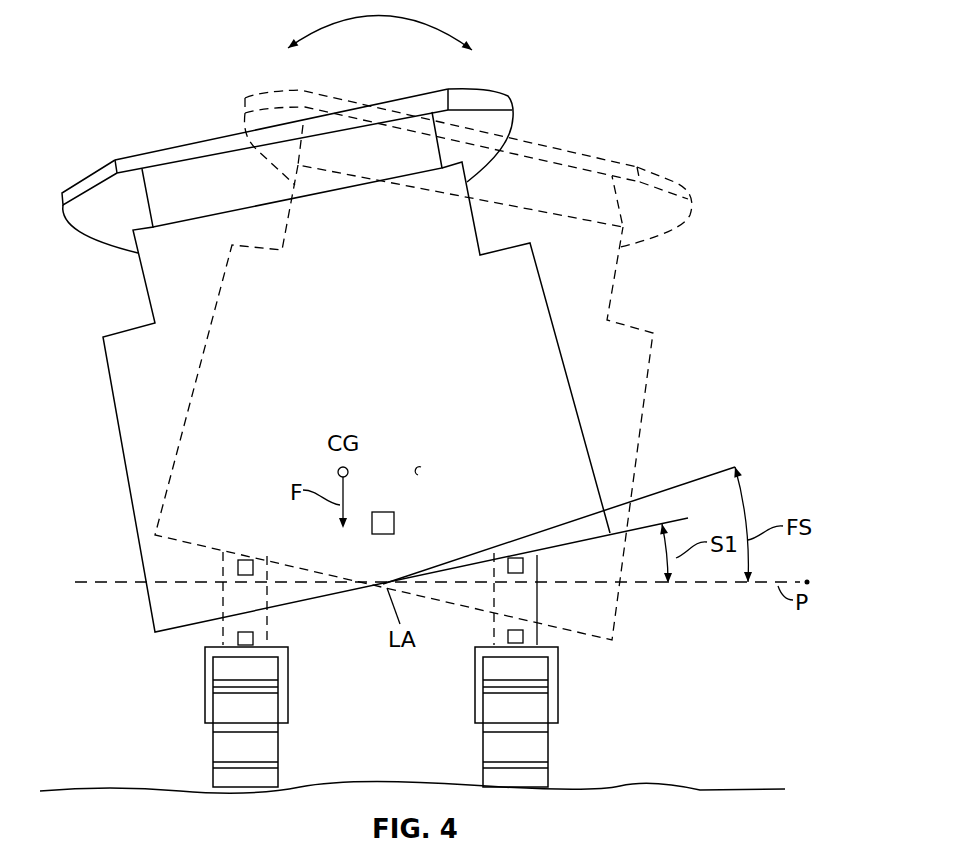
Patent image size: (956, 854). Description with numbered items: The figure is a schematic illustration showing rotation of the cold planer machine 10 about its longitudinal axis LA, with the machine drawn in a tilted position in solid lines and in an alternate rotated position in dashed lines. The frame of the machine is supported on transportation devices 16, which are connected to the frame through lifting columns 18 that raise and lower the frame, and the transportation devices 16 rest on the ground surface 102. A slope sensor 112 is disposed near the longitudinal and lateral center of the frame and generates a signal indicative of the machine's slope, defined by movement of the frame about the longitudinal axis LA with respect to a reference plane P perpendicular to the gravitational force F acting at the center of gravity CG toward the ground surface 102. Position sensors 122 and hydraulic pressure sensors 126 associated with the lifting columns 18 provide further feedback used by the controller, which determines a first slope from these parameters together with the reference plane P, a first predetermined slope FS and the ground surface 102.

The cold planer machine 10 is at (578, 83).
The transportation devices 16 is at (284, 745).
The lifting columns 18 is at (270, 620).
The ground surface 102 is at (718, 788).
The slope sensor 112 is at (397, 520).
The position sensors 122 is at (238, 639).
The hydraulic pressure sensors 126 is at (243, 559).